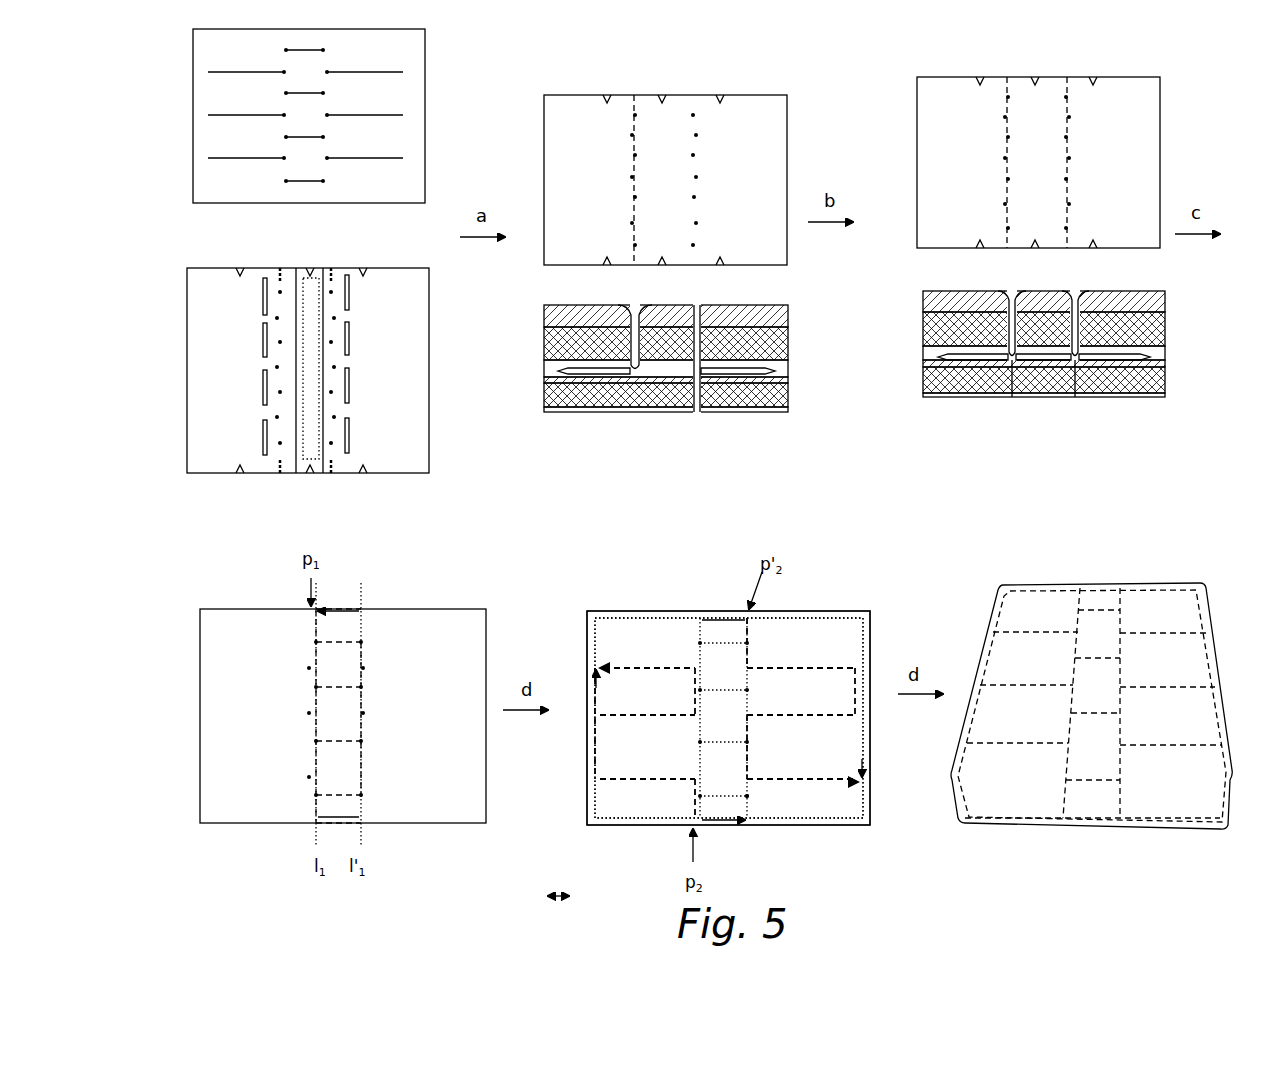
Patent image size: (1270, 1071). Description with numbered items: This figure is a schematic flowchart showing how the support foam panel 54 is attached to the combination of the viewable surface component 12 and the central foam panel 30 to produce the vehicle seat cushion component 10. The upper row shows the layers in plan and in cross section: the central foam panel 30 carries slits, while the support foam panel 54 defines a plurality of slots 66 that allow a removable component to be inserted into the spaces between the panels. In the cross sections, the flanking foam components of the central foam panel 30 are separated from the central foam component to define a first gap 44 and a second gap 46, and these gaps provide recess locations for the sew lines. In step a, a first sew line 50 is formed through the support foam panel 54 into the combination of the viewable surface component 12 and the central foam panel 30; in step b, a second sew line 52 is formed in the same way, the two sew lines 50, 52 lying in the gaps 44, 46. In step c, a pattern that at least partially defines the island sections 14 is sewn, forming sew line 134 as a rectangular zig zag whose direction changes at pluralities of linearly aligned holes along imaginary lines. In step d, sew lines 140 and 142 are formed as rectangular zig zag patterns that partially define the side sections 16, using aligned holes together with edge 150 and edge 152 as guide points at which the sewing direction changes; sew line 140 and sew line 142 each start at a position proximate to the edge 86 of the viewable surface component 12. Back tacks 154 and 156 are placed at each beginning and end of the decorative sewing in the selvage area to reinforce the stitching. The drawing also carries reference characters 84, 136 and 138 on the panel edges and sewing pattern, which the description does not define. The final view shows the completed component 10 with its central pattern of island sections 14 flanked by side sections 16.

The vehicle seat cushion component 10 is at (1162, 567).
The viewable surface component 12 is at (540, 305).
The island sections 14 is at (1091, 703).
The side sections 16 is at (1093, 709).
The central foam panel 30 is at (197, 49).
The first gap 44 is at (636, 330).
The second gap 46 is at (698, 330).
The first sew line 50 is at (633, 122).
The second sew line 52 is at (1068, 137).
The support foam panel 54 is at (190, 302).
The slots 66 is at (637, 412).
The first edge 84 is at (260, 609).
The edge 86 is at (415, 824).
The sew line 134 is at (310, 758).
The central cut line 136 is at (657, 668).
The side cut line 138 is at (795, 668).
The sew line 140 is at (617, 620).
The sew line 142 is at (745, 802).
The edge 150 is at (590, 657).
The edge 152 is at (868, 797).
The back tacks 154 is at (325, 609).
The back tacks 156 is at (594, 680).